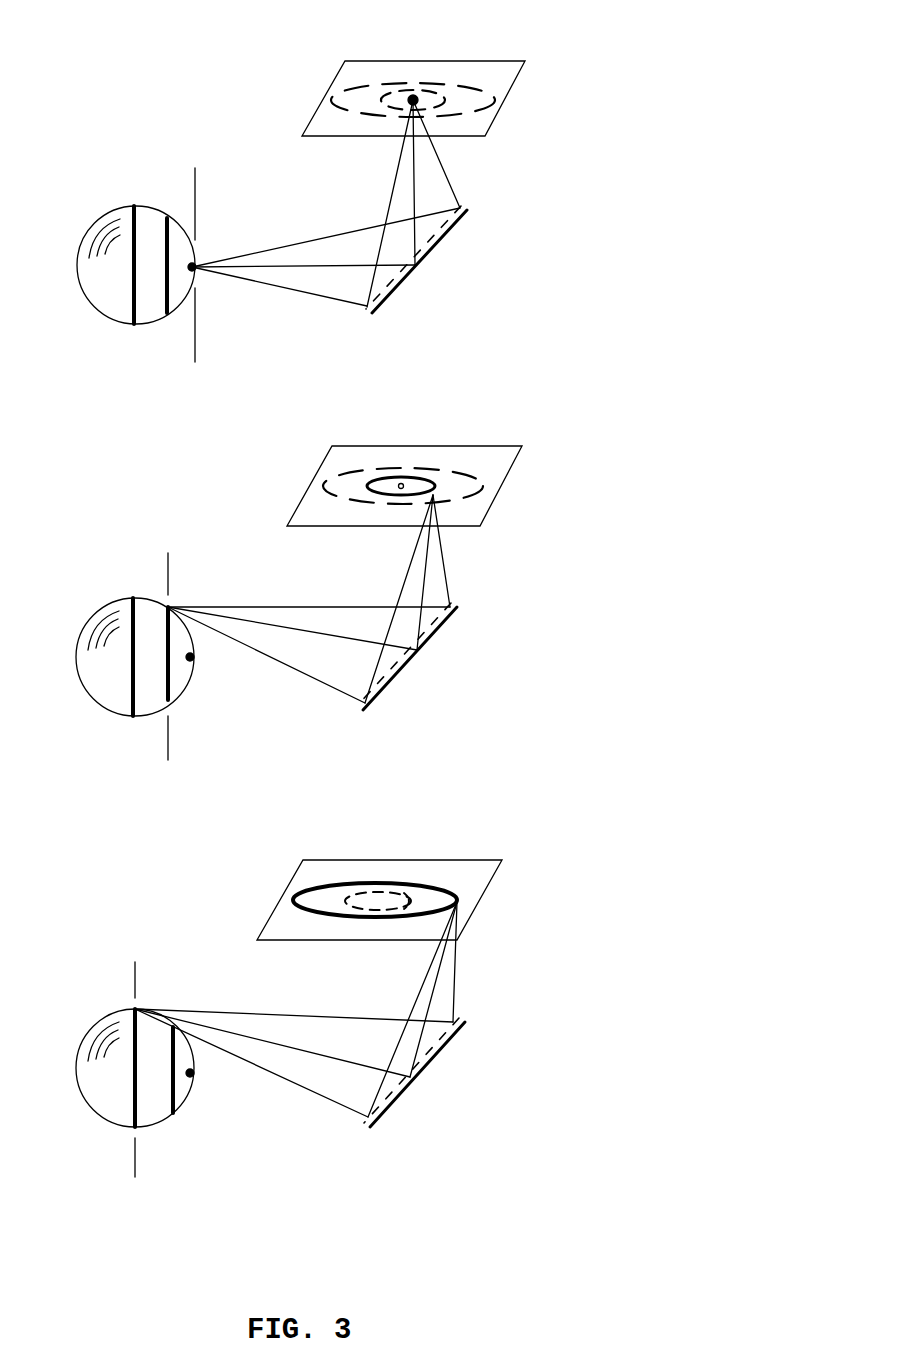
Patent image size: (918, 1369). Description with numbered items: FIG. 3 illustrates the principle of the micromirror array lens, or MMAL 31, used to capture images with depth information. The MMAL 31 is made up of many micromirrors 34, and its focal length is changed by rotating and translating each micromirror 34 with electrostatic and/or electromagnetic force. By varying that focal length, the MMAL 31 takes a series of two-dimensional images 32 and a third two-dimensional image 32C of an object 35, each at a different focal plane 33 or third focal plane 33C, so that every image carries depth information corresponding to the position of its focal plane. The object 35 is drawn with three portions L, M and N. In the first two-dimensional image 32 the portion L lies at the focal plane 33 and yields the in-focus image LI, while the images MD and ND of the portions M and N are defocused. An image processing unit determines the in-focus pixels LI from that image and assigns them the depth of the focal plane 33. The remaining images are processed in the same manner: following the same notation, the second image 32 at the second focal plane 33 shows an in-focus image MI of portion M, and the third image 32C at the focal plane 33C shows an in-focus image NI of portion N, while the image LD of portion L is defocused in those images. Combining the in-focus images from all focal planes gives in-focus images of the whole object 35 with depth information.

The MMAL 31 is at (410, 298).
The two-dimensional image 32 is at (512, 123).
The two-dimensional image 32C is at (492, 903).
The focal plane 33 is at (178, 448).
The focal plane 33C is at (133, 1051).
The micromirror 34 is at (367, 313).
The object 35 is at (115, 202).
The portion of object L is at (202, 255).
The portion of object N is at (132, 325).
The portion of object M is at (168, 312).
The light source image LD is at (422, 92).
The defocused image of portion N ND is at (477, 83).
The in-focus image LI is at (405, 98).
The ring image MI is at (367, 483).
The ring image NI is at (303, 888).
The defocused image of portion M MD is at (408, 900).